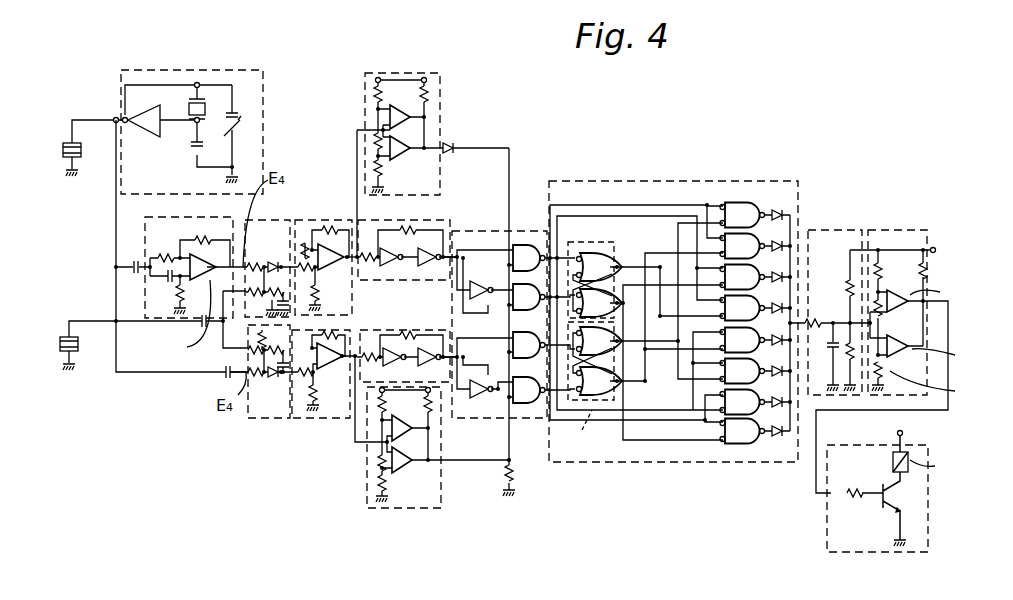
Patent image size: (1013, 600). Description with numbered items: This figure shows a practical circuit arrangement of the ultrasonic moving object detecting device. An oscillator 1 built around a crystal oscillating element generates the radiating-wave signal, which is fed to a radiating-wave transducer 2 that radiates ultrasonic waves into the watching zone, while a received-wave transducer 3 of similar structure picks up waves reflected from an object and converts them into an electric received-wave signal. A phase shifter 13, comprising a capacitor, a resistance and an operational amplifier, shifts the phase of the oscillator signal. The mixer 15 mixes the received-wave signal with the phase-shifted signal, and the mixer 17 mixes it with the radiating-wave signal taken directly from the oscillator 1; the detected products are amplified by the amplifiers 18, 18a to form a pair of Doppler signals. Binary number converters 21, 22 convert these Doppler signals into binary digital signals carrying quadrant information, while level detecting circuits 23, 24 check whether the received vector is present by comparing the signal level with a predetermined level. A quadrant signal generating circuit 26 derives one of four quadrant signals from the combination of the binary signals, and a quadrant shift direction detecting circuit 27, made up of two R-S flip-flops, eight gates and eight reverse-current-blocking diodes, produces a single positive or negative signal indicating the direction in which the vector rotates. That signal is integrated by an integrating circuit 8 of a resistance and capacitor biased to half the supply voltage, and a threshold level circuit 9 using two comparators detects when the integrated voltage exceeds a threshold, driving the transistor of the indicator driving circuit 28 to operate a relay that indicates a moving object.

The oscillator 1 is at (240, 70).
The radiating-wave transducer 2 is at (60, 150).
The received-wave transducer 3 is at (60, 356).
The integrating circuit 8 is at (836, 230).
The threshold level circuit 9 is at (892, 230).
The phase shifter 13 is at (145, 229).
The mixer 15 is at (274, 221).
The mixer 17 is at (265, 420).
The amplifier 18 is at (327, 220).
The amplifier 18a is at (320, 420).
The binary number converter 21 is at (434, 220).
The binary number converter 22 is at (398, 330).
The level detecting circuit 23 is at (405, 73).
The level detecting circuit 24 is at (408, 512).
The quadrant signal generating circuit 26 is at (528, 231).
The quadrant shift direction detecting circuit 27 is at (672, 181).
The indicator driving circuit 28 is at (930, 548).